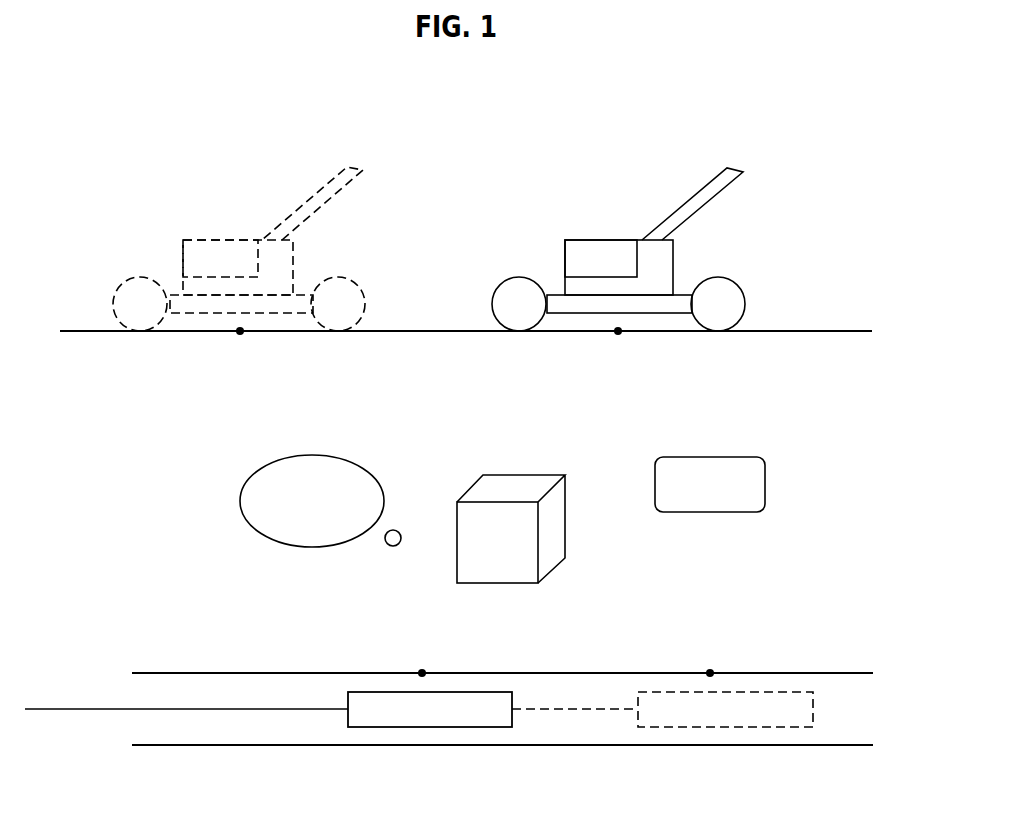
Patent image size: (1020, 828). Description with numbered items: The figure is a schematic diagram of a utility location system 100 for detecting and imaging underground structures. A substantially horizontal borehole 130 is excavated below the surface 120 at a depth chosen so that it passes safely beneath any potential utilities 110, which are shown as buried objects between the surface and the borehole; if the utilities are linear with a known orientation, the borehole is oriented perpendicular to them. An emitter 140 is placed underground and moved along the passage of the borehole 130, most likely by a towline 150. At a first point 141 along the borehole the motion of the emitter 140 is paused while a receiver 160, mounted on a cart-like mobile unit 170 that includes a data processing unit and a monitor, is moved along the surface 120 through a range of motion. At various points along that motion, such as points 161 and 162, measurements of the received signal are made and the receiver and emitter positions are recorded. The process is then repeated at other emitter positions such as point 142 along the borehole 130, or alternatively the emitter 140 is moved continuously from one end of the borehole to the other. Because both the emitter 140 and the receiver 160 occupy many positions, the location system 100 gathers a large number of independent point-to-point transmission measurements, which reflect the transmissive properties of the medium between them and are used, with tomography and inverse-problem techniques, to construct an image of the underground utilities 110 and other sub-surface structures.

The utility location system 100 is at (61, 85).
The utilities 110 is at (330, 477).
The surface 120 is at (817, 331).
The horizontal borehole 130 is at (203, 692).
The emitter 140 is at (457, 727).
The first point 141 is at (710, 673).
The point 142 is at (422, 673).
The towline 150 is at (115, 709).
The receiver 160 is at (583, 240).
The point 161 is at (618, 331).
The point 162 is at (240, 331).
The mobile unit 170 is at (673, 267).